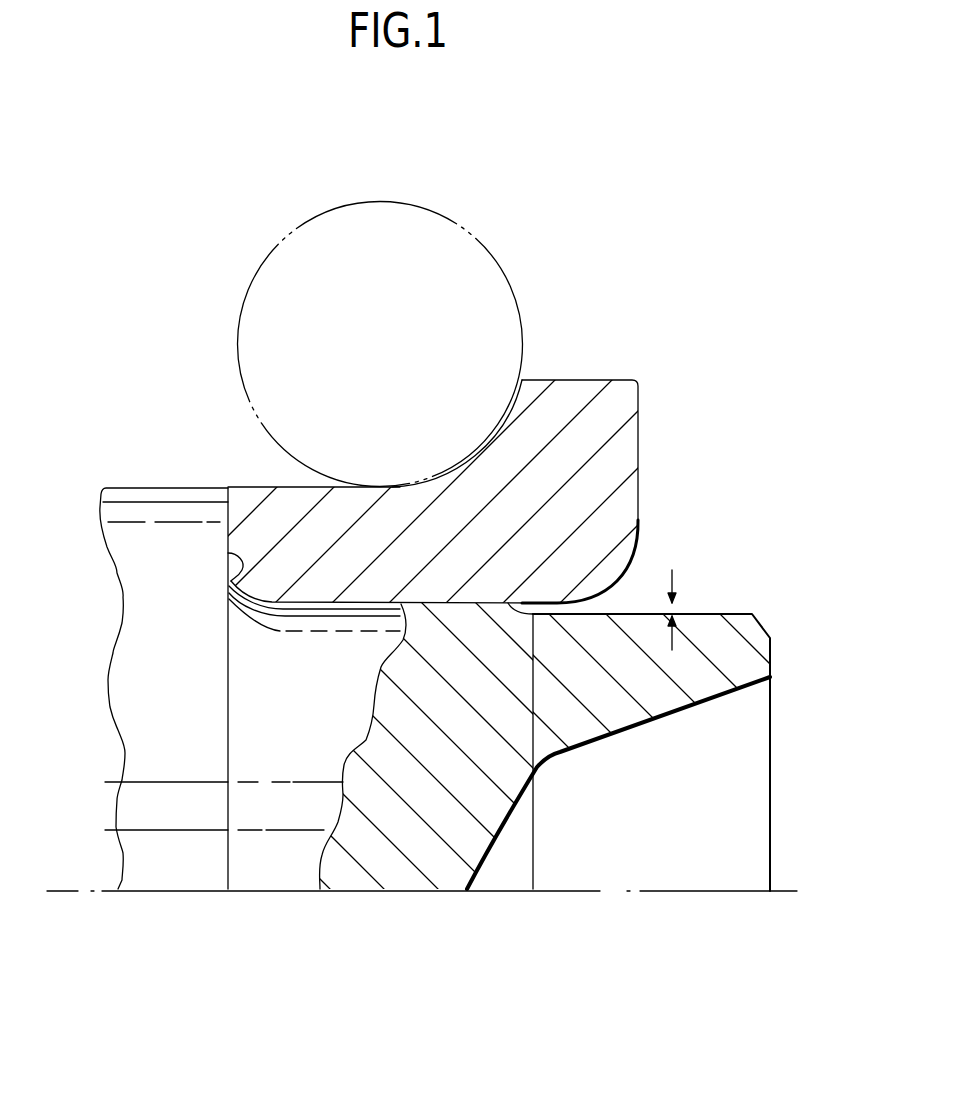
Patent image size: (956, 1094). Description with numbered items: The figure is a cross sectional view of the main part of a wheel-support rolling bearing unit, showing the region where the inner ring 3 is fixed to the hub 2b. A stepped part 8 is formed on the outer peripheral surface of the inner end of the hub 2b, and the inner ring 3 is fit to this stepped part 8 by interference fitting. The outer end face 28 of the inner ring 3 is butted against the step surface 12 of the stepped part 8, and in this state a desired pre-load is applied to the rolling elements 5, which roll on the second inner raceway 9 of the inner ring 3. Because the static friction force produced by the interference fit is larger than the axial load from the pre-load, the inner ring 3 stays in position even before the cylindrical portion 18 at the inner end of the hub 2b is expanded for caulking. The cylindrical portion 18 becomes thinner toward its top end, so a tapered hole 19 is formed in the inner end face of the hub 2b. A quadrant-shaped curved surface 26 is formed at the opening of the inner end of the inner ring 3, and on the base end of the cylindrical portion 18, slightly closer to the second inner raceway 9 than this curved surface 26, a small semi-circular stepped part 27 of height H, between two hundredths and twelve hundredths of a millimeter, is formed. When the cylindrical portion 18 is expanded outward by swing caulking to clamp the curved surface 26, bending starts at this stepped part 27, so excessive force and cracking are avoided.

The rolling elements 5 is at (394, 200).
The inner ring 3 is at (583, 393).
The second inner raceway 9 is at (505, 407).
The curved surface 26 is at (617, 580).
The height of stepped part H is at (673, 607).
The hub 2b is at (133, 496).
The step surface 12 is at (230, 595).
The outer end face 28 is at (225, 490).
The stepped part 8 is at (443, 603).
The cylindrical portion 18 is at (750, 655).
The stepped part 27 is at (537, 767).
The tapered hole 19 is at (604, 732).